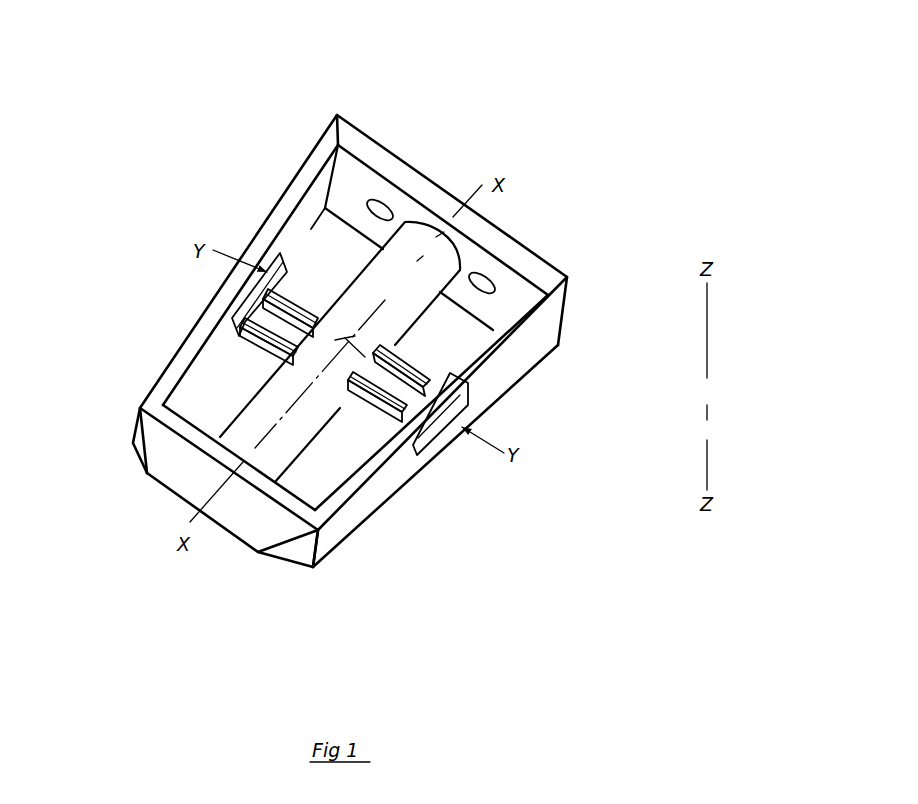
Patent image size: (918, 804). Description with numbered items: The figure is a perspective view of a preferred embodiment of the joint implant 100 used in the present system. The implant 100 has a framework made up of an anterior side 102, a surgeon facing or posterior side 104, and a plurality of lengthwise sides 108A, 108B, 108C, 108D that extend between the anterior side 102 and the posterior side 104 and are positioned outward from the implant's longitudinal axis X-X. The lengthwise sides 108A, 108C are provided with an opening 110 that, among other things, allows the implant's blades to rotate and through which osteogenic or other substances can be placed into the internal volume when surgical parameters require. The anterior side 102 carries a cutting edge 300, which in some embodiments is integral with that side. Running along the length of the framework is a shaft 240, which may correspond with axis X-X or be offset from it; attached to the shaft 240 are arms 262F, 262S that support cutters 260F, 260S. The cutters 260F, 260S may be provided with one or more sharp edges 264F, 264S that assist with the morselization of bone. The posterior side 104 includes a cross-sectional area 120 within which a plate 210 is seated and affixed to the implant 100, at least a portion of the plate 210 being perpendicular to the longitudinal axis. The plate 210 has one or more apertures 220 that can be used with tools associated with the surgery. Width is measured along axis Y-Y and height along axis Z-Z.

The joint implant 100 is at (345, 344).
The anterior side 102 is at (170, 564).
The posterior side 104 is at (404, 322).
The lengthwise side 108A is at (205, 523).
The lengthwise side 108B is at (473, 422).
The lengthwise side 108C is at (464, 180).
The lengthwise side 108D is at (199, 275).
The opening 110 is at (340, 141).
The cross-sectional area 120 is at (355, 264).
The plate 210 is at (458, 221).
The aperture 220 is at (564, 254).
The shaft 240 is at (440, 352).
The cutter 260S is at (225, 280).
The arm 262S is at (183, 332).
The sharp edge 264S is at (256, 214).
The cutter 260F is at (404, 521).
The arm 262F is at (365, 489).
The sharp edge 264F is at (540, 390).
The cutting edge 300 is at (118, 474).